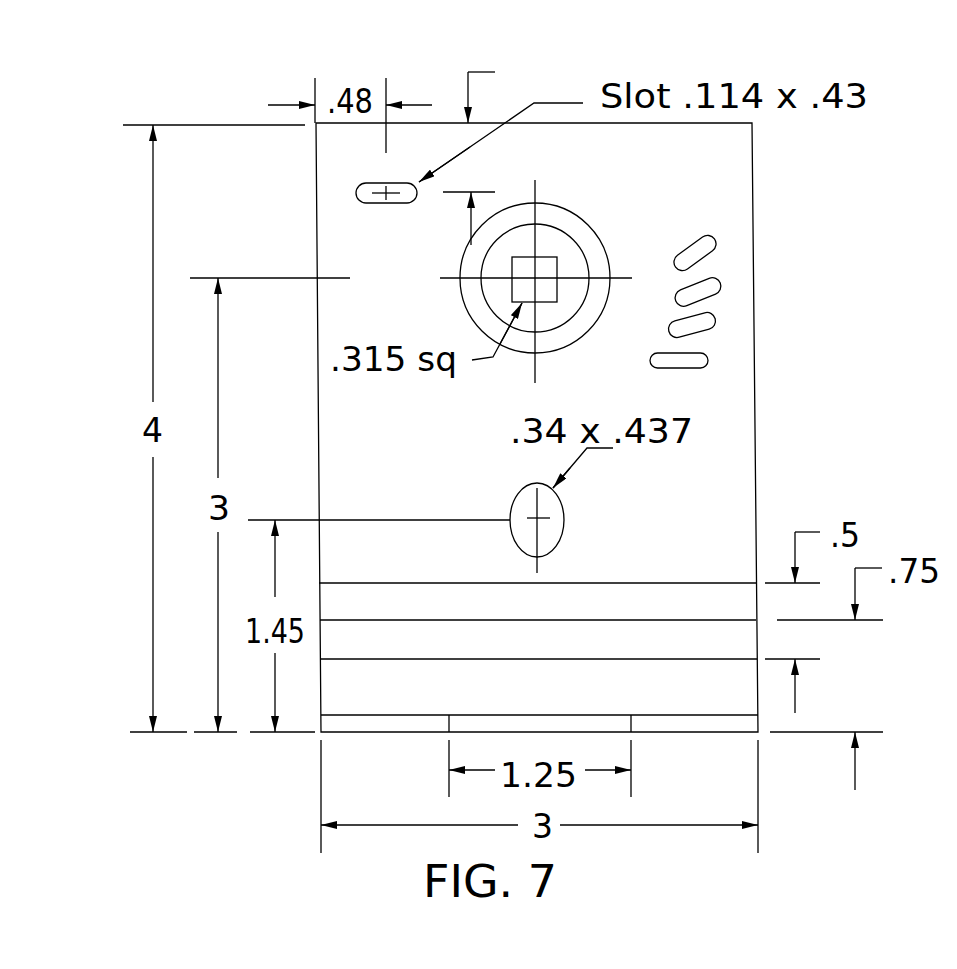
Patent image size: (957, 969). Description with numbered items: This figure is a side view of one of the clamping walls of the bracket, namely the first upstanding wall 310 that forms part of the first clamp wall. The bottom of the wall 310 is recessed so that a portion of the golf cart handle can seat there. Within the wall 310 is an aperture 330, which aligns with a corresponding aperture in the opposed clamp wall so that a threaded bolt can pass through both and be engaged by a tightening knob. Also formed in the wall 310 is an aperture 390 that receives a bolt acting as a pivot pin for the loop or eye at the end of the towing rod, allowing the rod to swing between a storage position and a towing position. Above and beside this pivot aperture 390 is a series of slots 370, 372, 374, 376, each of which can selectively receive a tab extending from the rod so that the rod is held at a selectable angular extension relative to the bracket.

The first upstanding wall 310 is at (730, 173).
The aperture 330 is at (565, 527).
The slot 370 is at (722, 240).
The slot 372 is at (725, 282).
The slot 374 is at (723, 317).
The slot 376 is at (710, 360).
The aperture 390 is at (557, 265).